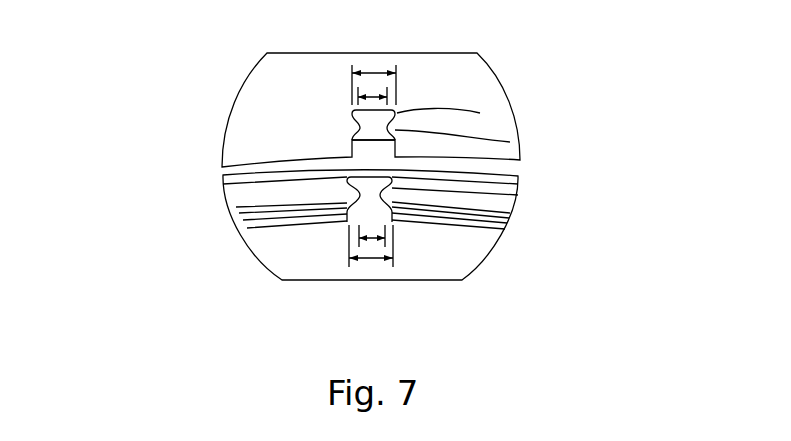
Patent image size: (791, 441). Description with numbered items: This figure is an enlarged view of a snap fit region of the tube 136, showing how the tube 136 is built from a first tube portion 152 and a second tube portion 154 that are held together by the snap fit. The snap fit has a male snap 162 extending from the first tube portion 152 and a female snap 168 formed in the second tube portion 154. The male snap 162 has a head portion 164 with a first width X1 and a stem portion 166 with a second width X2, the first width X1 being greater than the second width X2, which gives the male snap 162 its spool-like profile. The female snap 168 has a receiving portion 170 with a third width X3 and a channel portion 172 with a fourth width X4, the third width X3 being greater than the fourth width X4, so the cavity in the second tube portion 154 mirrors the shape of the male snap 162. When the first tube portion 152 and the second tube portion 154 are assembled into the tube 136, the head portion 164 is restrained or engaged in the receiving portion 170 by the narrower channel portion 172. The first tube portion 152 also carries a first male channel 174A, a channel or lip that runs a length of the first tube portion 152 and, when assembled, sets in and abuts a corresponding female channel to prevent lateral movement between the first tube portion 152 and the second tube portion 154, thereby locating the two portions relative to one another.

The tube 136 is at (351, 111).
The first tube portion 152 is at (280, 260).
The second tube portion 154 is at (431, 70).
The male snap 162 is at (390, 190).
The head portion 164 is at (510, 197).
The stem portion 166 is at (370, 212).
The female snap 168 is at (246, 121).
The receiving portion 170 is at (480, 113).
The channel portion 172 is at (510, 142).
The first male channel 174A is at (250, 232).
The first width X1 is at (372, 262).
The second width X2 is at (376, 248).
The third width X3 is at (367, 73).
The fourth width X4 is at (378, 97).